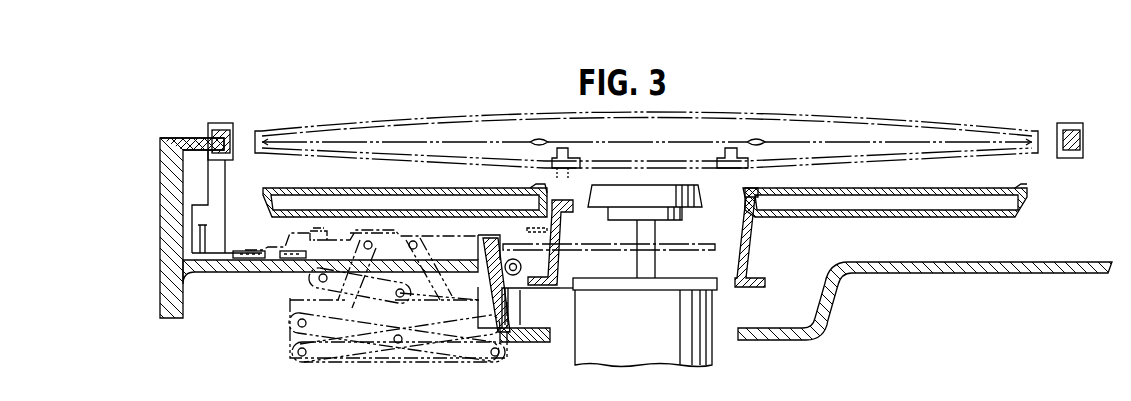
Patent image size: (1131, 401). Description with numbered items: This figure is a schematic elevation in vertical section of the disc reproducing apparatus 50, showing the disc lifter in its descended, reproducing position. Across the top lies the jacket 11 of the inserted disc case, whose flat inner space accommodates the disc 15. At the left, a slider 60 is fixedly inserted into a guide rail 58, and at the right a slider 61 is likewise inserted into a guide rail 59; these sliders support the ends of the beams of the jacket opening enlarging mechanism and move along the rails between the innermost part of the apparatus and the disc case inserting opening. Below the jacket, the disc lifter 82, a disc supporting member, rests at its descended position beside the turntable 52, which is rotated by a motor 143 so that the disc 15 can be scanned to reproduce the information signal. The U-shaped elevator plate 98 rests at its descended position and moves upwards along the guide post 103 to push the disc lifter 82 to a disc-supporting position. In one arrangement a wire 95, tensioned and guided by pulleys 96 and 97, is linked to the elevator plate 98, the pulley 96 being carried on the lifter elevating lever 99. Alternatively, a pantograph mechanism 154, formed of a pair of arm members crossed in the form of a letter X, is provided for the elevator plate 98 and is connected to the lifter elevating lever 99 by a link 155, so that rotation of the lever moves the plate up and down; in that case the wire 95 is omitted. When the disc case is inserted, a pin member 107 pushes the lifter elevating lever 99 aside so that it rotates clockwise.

The reproducing apparatus 50 is at (848, 98).
The guide rail 58 is at (210, 133).
The slider 60 is at (230, 133).
The pin member 107 is at (209, 238).
The lifter elevating lever 99 is at (247, 250).
The link 155 is at (360, 232).
The pulley 96 is at (280, 259).
The jacket 11 is at (502, 118).
The disc 15 is at (396, 190).
The turntable 52 is at (952, 218).
The disc lifter 82 is at (750, 168).
The wire 95 is at (439, 259).
The guide post 103 is at (480, 258).
The pulley 97 is at (522, 265).
The elevator plate 98 is at (668, 250).
The motor 143 is at (708, 340).
The pantograph mechanism 154 is at (400, 347).
The slider 61 is at (1068, 124).
The guide rail 59 is at (1082, 141).